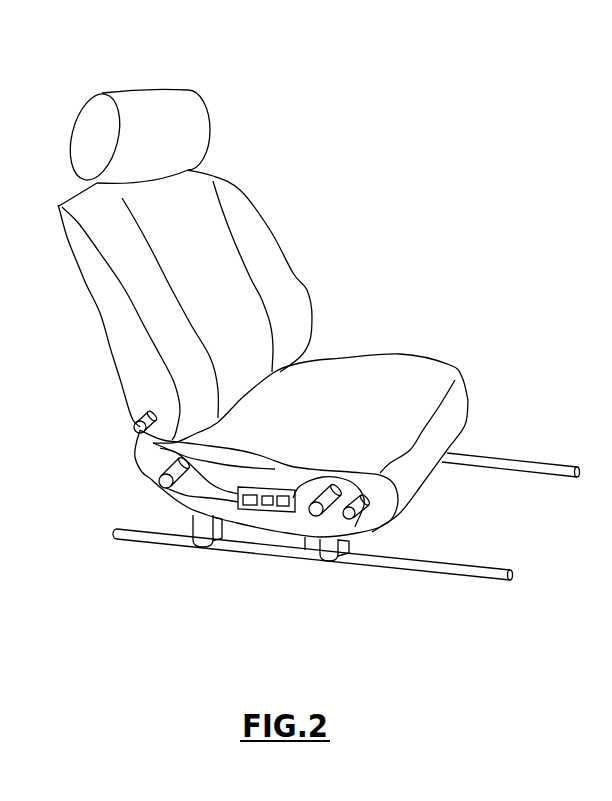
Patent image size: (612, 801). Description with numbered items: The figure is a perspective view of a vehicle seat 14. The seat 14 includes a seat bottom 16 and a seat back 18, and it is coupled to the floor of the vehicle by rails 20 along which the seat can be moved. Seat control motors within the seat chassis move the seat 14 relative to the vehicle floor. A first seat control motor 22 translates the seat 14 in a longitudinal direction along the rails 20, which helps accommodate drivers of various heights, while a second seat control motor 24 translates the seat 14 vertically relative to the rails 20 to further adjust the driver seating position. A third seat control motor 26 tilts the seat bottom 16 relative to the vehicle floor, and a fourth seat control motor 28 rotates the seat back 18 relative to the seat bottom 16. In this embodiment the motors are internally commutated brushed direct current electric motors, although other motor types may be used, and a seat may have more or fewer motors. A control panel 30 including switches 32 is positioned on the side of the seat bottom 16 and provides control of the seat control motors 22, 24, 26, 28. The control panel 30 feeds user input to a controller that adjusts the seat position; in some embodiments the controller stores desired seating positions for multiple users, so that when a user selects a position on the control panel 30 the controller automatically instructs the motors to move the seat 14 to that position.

The seat 14 is at (247, 120).
The seat bottom 16 is at (437, 356).
The seat back 18 is at (240, 192).
The rails 20 is at (467, 467).
The first seat control motor 22 is at (316, 516).
The second seat control motor 24 is at (350, 520).
The third seat control motor 26 is at (160, 486).
The fourth seat control motor 28 is at (137, 427).
The control panel 30 is at (258, 512).
The switches 32 is at (281, 489).